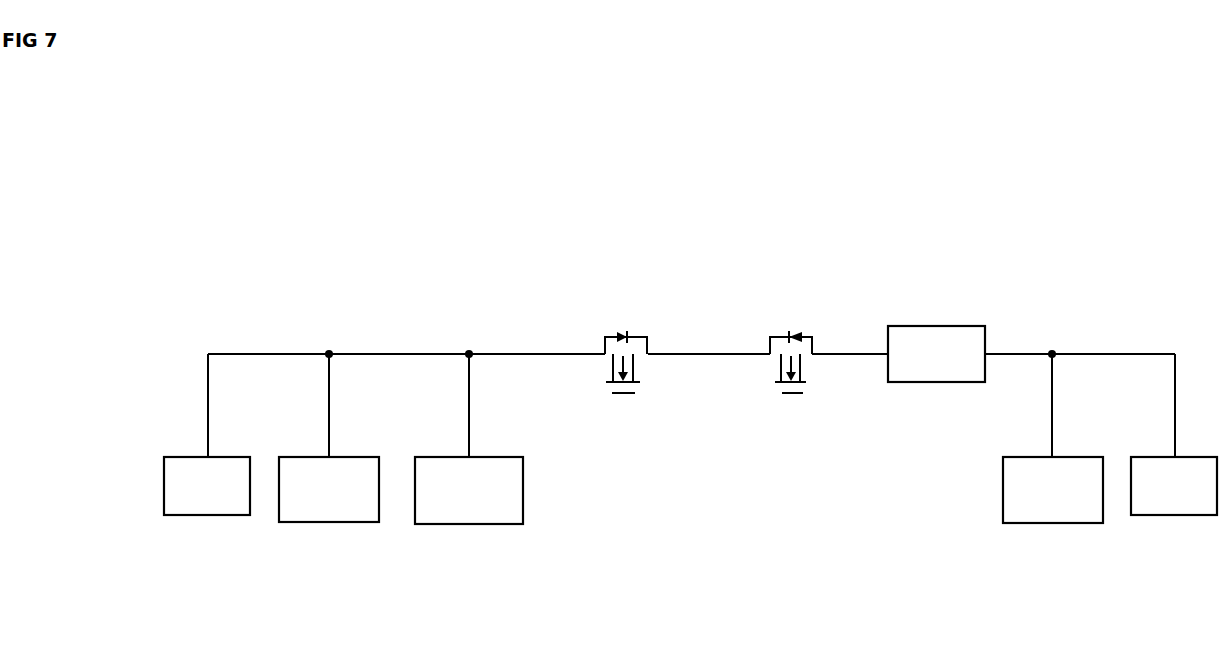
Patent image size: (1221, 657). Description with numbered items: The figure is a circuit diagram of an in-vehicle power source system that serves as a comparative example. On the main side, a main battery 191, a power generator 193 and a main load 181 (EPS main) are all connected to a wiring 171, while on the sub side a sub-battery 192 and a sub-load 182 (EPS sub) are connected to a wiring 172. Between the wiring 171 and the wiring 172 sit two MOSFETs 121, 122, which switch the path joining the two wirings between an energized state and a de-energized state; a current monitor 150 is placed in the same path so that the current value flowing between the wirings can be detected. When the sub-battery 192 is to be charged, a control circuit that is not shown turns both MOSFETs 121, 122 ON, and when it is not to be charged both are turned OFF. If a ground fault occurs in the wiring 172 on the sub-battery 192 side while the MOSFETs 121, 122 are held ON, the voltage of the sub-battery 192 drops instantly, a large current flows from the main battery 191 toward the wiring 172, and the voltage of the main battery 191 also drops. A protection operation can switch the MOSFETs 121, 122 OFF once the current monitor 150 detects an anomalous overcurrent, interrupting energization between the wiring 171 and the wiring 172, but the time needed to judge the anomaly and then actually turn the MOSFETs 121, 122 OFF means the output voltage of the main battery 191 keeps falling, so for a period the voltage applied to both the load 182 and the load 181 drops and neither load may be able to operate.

The MOSFET 121 is at (610, 375).
The MOSFET 122 is at (803, 375).
The current monitor 150 is at (943, 326).
The wiring 171 is at (517, 354).
The wiring 172 is at (837, 354).
The main load 181 is at (225, 515).
The sub-load 182 is at (1182, 515).
The main battery 191 is at (335, 522).
The sub-battery 192 is at (1053, 523).
The power generator 193 is at (472, 524).